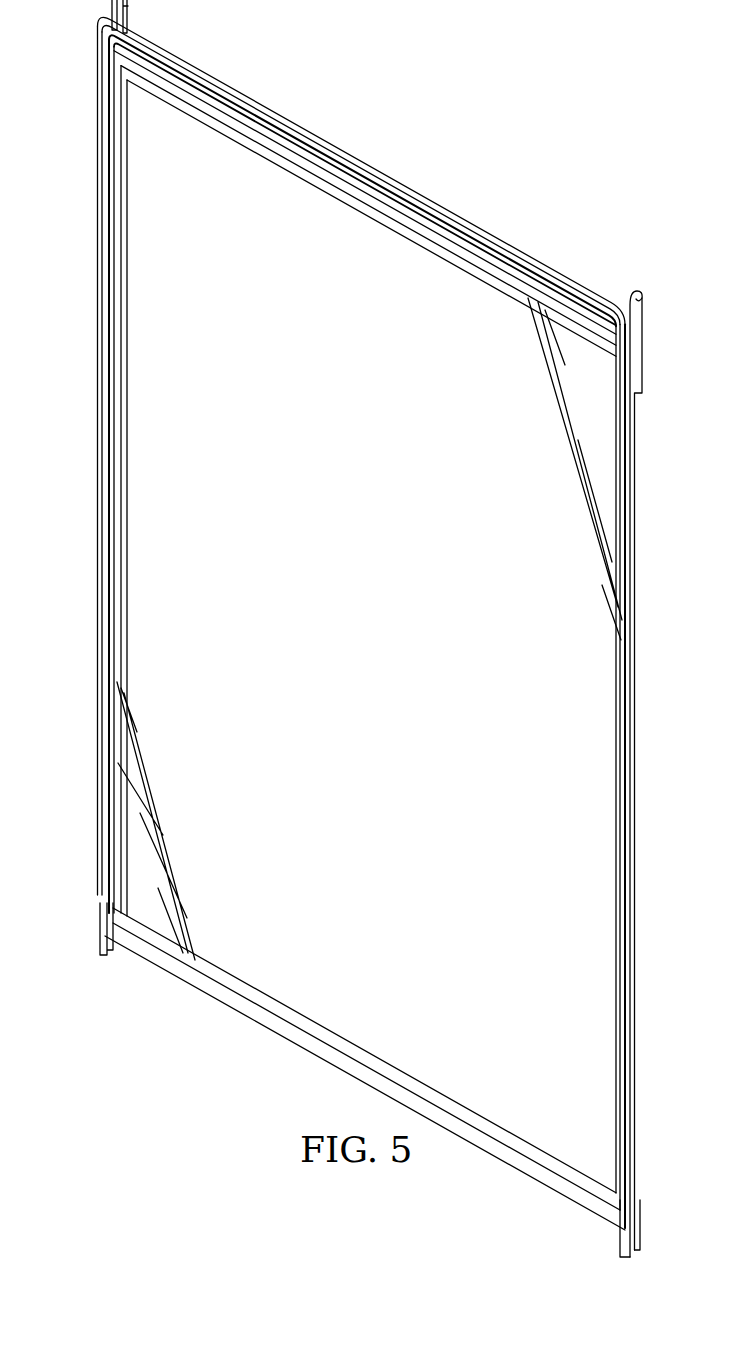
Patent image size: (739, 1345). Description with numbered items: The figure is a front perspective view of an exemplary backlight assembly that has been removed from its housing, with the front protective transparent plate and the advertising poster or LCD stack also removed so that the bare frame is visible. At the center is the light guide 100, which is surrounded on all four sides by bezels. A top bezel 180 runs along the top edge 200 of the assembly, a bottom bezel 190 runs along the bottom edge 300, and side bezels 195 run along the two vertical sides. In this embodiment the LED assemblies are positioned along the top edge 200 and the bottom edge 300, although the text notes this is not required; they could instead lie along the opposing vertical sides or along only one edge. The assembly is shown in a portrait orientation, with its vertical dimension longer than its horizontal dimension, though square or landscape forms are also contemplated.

The light guide 100 is at (407, 1040).
The top bezel 180 is at (337, 177).
The bottom bezel 190 is at (214, 983).
The side bezels 195 is at (118, 608).
The top edge 200 is at (462, 257).
The bottom edge 300 is at (277, 1012).